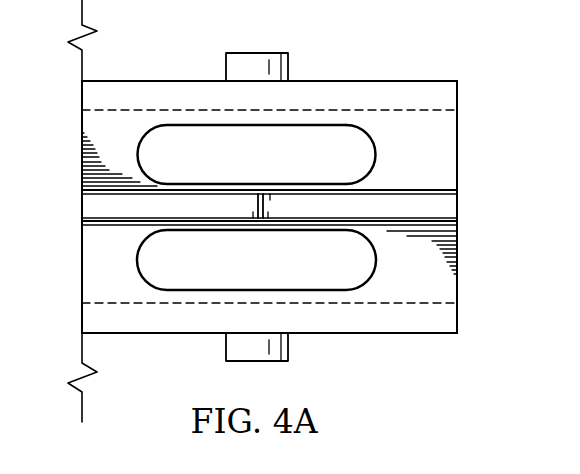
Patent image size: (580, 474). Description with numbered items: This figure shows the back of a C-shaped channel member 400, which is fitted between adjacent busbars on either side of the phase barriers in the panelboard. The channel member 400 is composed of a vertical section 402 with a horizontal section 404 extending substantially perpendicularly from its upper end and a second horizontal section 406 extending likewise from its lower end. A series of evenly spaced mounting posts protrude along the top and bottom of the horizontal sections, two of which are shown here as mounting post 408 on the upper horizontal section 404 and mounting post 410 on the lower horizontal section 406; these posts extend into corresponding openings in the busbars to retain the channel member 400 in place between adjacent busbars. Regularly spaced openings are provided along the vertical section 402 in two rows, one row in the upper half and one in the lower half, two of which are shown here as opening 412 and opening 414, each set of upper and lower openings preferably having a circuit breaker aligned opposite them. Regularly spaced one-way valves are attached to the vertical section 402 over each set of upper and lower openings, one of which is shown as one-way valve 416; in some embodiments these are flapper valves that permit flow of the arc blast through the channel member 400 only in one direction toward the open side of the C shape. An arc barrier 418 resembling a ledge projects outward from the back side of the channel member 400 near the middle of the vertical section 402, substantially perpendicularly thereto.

The channel member 400 is at (162, 80).
The vertical section 402 is at (458, 170).
The horizontal section 404 is at (458, 97).
The horizontal section 406 is at (458, 320).
The mounting post 408 is at (256, 53).
The mounting post 410 is at (288, 352).
The opening 412 is at (237, 168).
The opening 414 is at (237, 272).
The one-way valve 416 is at (363, 151).
The arc barrier 418 is at (93, 204).